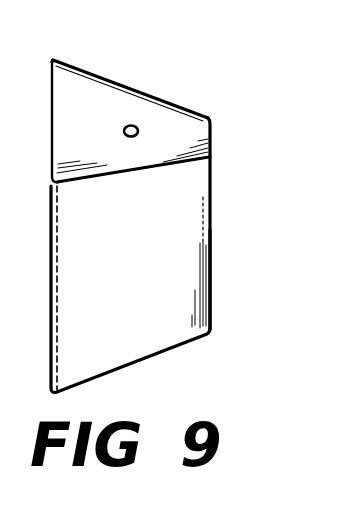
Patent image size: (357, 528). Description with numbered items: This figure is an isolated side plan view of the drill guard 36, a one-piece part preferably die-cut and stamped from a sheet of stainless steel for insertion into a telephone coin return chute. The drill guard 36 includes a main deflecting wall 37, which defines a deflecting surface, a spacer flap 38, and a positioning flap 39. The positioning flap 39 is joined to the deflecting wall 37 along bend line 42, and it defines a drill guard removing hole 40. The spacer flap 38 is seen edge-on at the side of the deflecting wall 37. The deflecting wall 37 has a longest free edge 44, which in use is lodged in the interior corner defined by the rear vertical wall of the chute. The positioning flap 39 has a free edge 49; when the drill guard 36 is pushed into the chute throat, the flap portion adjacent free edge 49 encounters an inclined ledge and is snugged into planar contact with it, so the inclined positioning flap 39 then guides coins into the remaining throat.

The drill guard 36 is at (133, 205).
The main deflecting wall 37 is at (158, 280).
The spacer flap 38 is at (50, 304).
The positioning flap 39 is at (163, 128).
The drill guard removing hole 40 is at (128, 126).
The bend line 42 is at (151, 168).
The longest free edge 44 is at (210, 299).
The free edge 49 is at (97, 36).